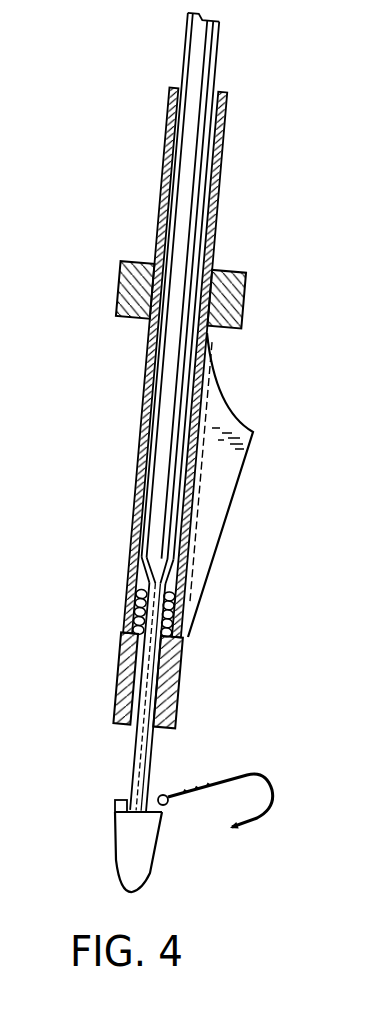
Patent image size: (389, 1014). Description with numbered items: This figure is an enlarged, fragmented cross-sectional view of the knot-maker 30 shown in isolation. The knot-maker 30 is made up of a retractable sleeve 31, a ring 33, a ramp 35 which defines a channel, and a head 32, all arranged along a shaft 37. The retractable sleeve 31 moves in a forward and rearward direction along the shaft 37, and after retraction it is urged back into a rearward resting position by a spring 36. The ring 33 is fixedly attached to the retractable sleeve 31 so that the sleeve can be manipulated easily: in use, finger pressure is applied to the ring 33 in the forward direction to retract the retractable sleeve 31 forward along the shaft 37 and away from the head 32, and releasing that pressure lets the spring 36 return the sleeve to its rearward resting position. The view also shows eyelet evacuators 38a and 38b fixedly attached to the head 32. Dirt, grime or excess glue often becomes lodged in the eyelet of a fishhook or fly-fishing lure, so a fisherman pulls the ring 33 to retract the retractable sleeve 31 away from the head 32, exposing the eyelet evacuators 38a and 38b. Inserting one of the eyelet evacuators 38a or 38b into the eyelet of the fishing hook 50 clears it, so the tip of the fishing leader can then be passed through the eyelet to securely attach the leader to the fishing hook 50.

The knot-maker 30 is at (118, 381).
The retractable sleeve 31 is at (140, 457).
The head 32 is at (135, 868).
The ring 33 is at (243, 277).
The ramp 35 is at (250, 455).
The spring 36 is at (185, 616).
The shaft 37 is at (152, 742).
The eyelet evacuator 38a is at (114, 800).
The eyelet evacuator 38b is at (165, 805).
The fishing hook 50 is at (273, 790).